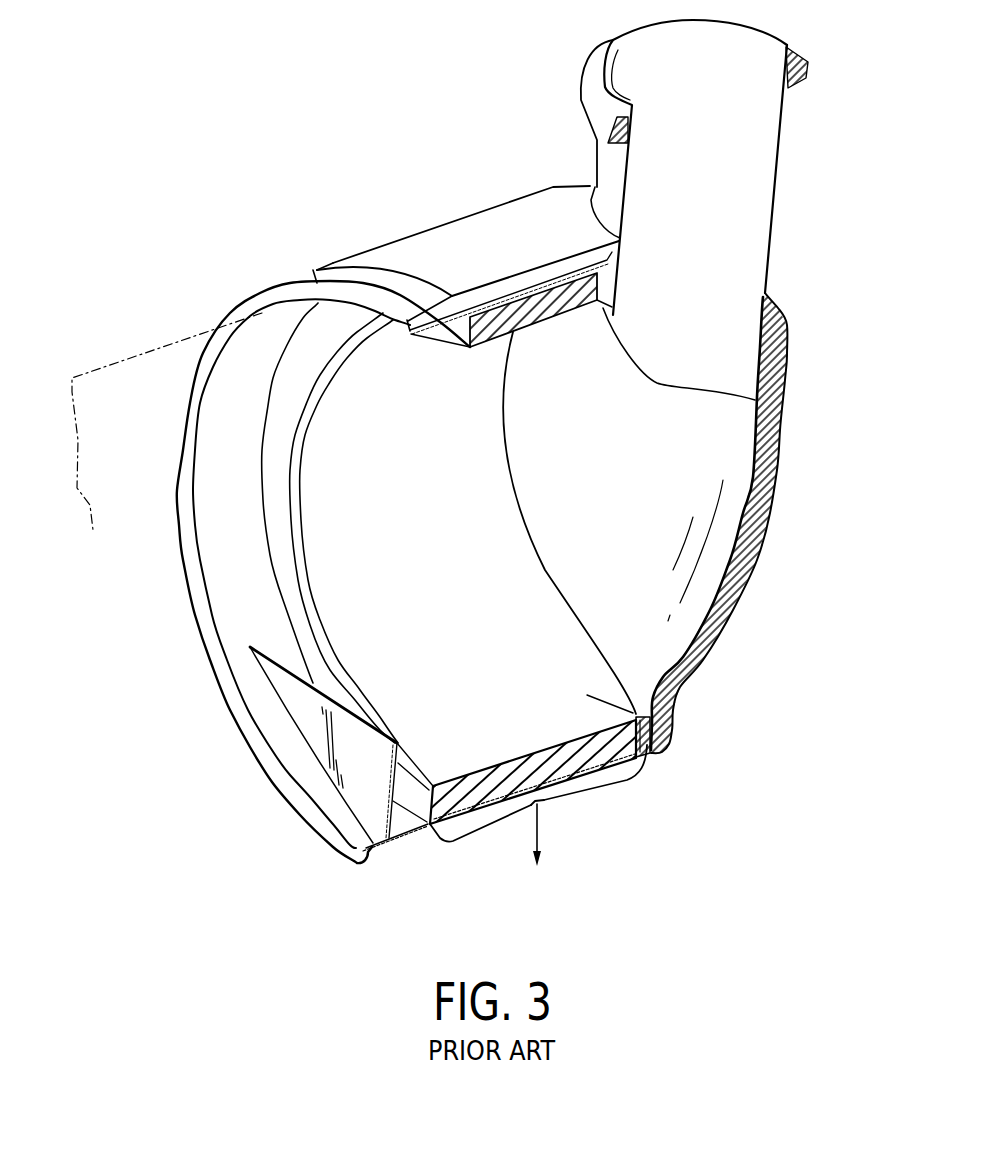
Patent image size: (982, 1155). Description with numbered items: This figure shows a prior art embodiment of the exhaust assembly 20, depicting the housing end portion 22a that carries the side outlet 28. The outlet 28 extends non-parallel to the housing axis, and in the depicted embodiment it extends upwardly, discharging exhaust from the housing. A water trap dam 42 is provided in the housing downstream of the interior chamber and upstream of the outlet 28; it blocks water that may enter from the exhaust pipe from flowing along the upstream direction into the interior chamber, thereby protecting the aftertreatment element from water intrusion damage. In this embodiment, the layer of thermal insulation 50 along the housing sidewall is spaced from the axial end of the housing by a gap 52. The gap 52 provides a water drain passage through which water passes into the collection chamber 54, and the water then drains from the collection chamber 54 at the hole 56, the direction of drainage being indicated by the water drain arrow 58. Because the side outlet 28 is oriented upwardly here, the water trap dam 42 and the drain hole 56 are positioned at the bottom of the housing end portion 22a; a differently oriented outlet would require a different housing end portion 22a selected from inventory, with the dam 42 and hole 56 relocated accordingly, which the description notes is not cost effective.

The exhaust assembly 20 is at (745, 679).
The housing end portion 22a is at (537, 217).
The outlet 28 is at (772, 237).
The water trap dam 42 is at (354, 743).
The layer of thermal insulation 50 is at (542, 752).
The gap 52 is at (650, 715).
The collection chamber 54 is at (630, 777).
The hole 56 is at (543, 810).
The water drain arrow 58 is at (543, 840).